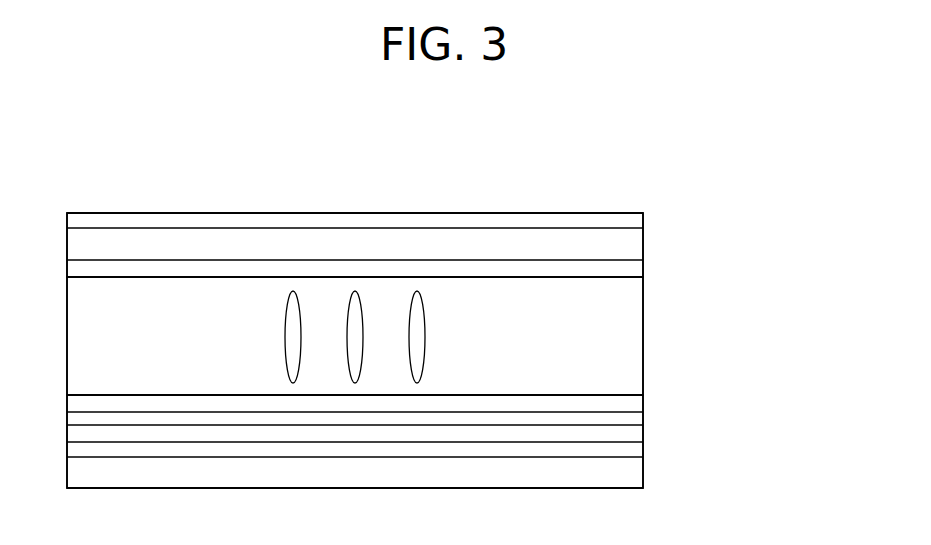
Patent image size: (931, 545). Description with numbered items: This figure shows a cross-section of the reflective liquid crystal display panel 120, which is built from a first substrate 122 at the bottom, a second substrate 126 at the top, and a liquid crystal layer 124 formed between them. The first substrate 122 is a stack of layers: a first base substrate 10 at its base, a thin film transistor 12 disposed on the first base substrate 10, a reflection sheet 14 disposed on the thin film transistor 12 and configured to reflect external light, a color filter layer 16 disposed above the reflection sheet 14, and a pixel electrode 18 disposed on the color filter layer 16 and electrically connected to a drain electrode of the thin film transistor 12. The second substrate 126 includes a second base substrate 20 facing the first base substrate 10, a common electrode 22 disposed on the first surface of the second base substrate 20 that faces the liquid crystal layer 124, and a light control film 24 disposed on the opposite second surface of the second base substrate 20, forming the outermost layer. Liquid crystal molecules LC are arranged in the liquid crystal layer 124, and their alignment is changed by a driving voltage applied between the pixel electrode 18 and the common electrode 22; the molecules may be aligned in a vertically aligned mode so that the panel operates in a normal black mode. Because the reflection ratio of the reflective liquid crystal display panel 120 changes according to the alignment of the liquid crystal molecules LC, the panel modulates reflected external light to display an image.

The first base substrate 10 is at (646, 480).
The thin film transistor 12 is at (646, 450).
The reflection sheet 14 is at (646, 433).
The color filter layer 16 is at (646, 421).
The pixel electrode 18 is at (646, 403).
The second base substrate 20 is at (646, 243).
The common electrode 22 is at (646, 267).
The light control film 24 is at (646, 221).
The liquid crystal molecules LC is at (425, 333).
The reflective liquid crystal display panel 120 is at (756, 236).
The first substrate 122 is at (704, 383).
The liquid crystal layer 124 is at (645, 340).
The second substrate 126 is at (704, 212).